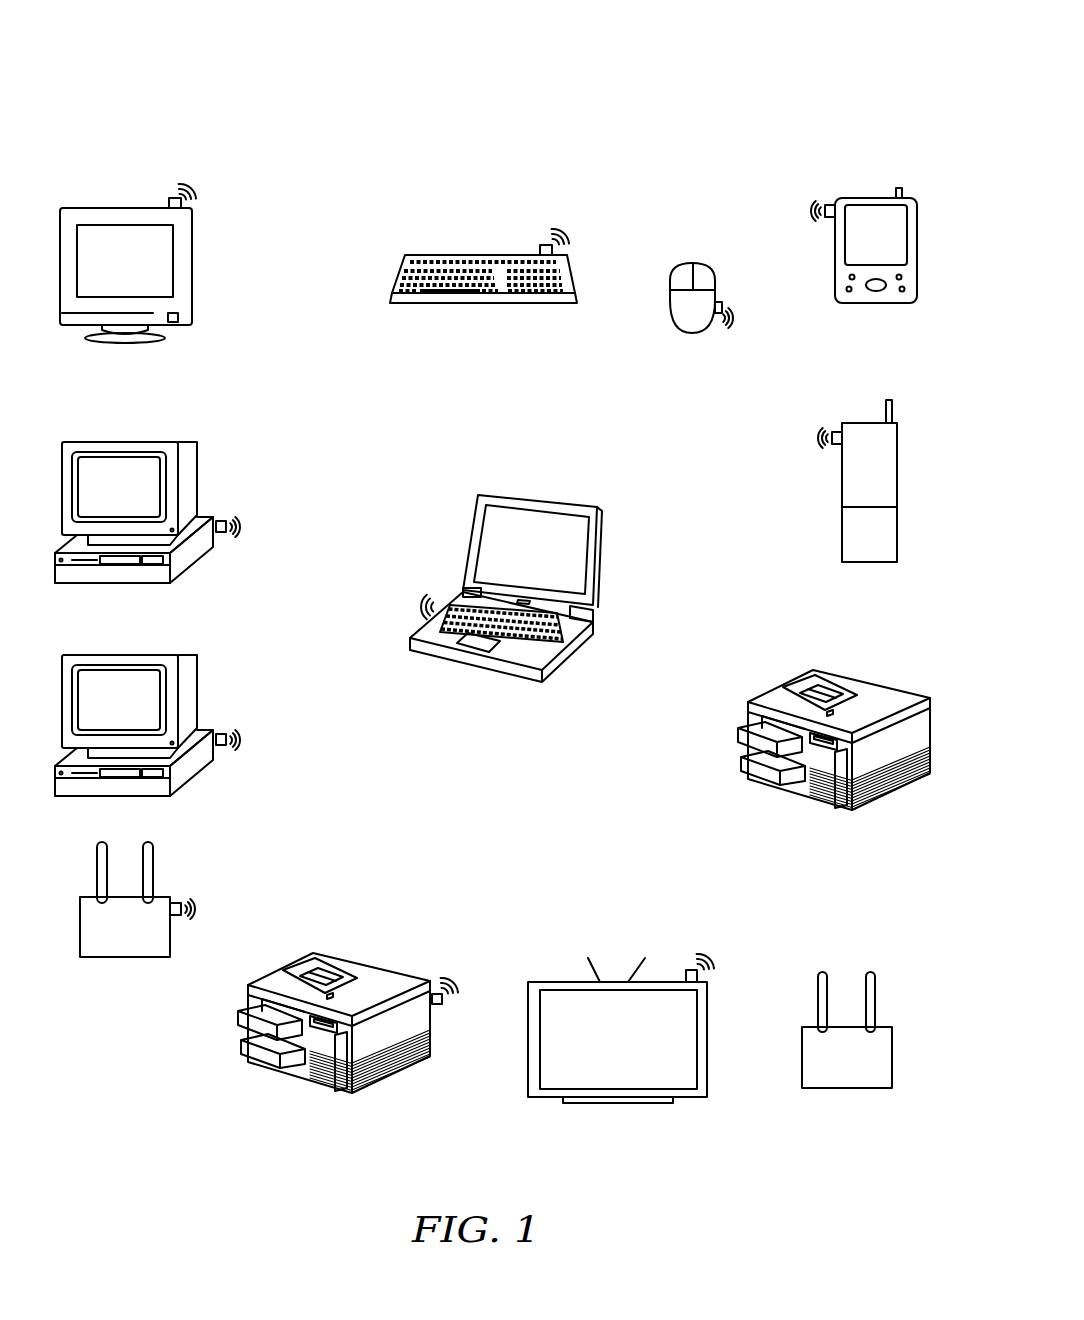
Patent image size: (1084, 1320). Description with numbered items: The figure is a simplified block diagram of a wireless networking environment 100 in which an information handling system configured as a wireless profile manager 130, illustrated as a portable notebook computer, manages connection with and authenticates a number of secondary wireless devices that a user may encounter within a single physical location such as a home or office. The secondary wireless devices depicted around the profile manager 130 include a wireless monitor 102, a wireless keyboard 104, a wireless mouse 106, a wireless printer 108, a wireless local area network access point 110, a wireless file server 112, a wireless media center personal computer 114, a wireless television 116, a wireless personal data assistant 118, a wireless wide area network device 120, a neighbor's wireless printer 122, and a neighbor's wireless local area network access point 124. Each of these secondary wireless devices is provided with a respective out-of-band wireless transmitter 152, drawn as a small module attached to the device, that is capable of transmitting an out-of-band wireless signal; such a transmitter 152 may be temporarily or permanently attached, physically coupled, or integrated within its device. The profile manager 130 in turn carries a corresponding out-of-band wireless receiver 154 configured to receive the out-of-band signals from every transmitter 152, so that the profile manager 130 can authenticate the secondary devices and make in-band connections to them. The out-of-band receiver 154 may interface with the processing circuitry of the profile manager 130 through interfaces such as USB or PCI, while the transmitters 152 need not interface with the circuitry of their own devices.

The wireless networking environment 100 is at (772, 32).
The wireless monitor 102 is at (142, 345).
The wireless keyboard 104 is at (455, 255).
The wireless mouse 106 is at (677, 263).
The wireless printer 108 is at (407, 1070).
The wireless local area network access point 110 is at (170, 940).
The wireless file server 112 is at (90, 583).
The wireless media center personal computer 114 is at (173, 790).
The wireless television 116 is at (553, 982).
The wireless personal data assistant 118 is at (863, 198).
The wireless wide area network device 120 is at (842, 480).
The neighbor's wireless printer 122 is at (793, 678).
The neighbor's wireless local area network access point 124 is at (882, 1025).
The wireless profile manager 130 is at (580, 647).
The out-of-band wireless transmitter 152 is at (168, 198).
The out-of-band wireless receiver 154 is at (438, 612).